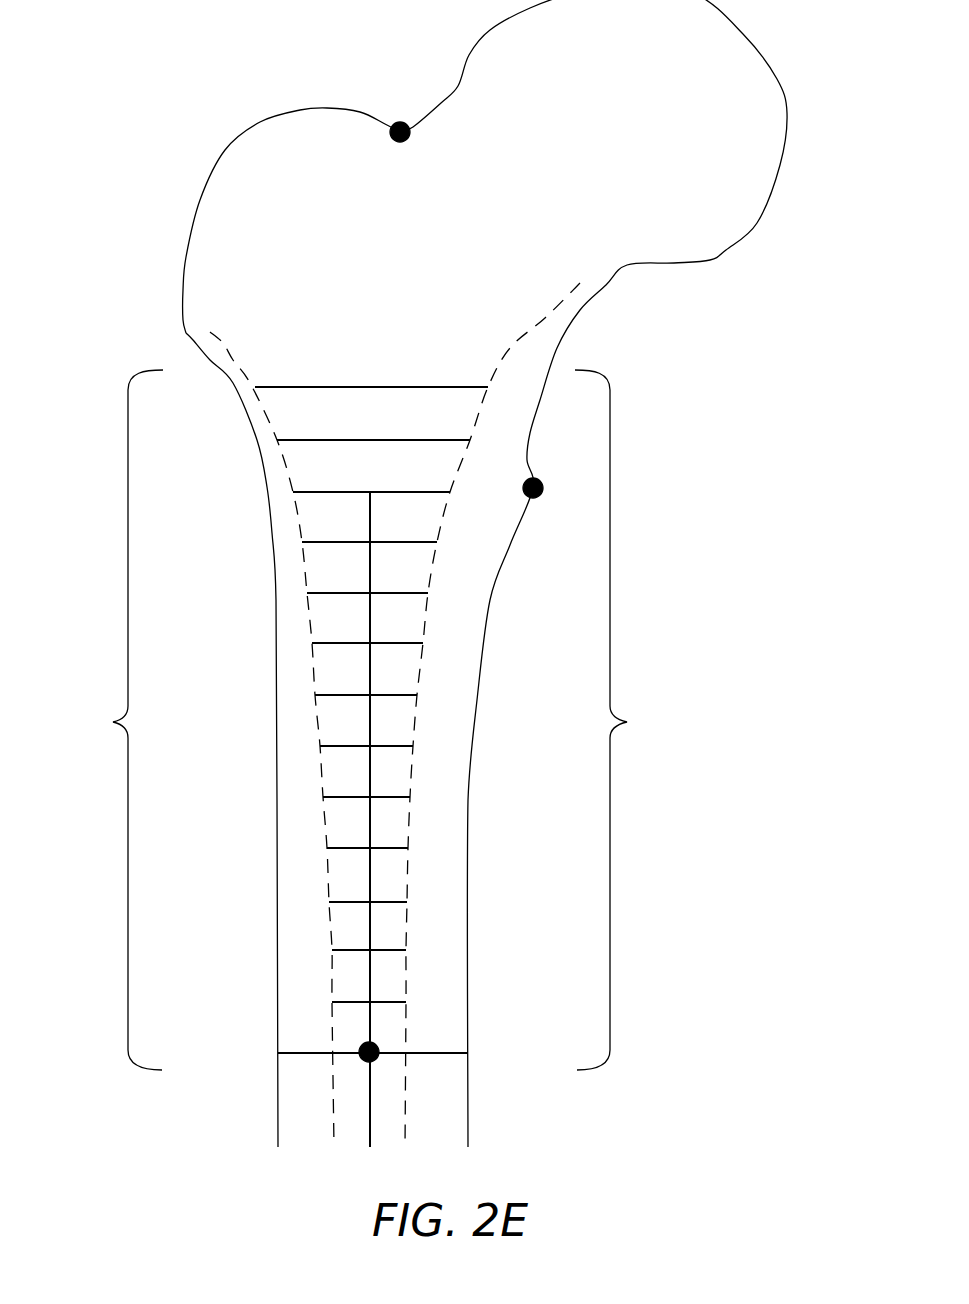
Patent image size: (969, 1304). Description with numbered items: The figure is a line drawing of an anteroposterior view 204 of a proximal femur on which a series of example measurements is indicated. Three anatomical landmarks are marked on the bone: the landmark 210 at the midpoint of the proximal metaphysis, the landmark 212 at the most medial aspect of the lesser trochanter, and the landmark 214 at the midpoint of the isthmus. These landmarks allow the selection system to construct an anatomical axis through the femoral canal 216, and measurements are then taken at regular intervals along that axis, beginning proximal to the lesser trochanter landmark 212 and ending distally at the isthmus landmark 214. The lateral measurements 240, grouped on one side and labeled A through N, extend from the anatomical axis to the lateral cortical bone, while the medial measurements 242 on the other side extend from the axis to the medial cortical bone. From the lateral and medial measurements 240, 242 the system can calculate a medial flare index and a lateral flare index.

The anteroposterior (AP) view 204 is at (167, 43).
The landmark 210 is at (400, 132).
The landmark 212 is at (533, 488).
The landmark 214 is at (369, 1052).
The femoral canal 216 is at (370, 907).
The lateral measurements 240 is at (113, 720).
The medial measurements 242 is at (626, 720).